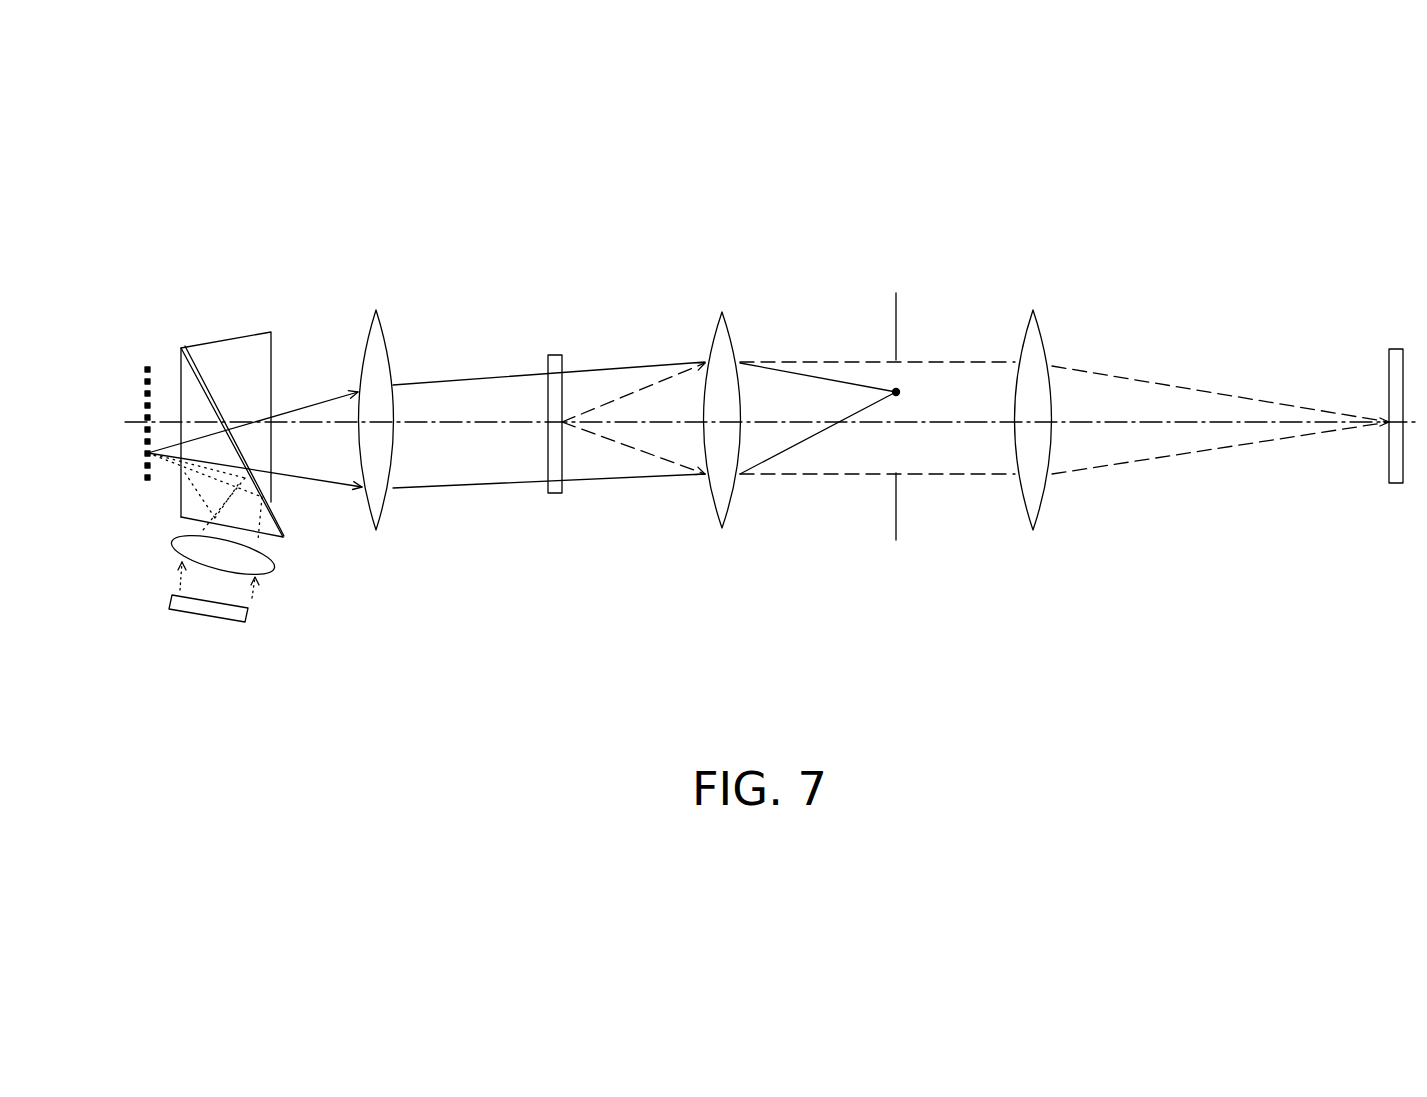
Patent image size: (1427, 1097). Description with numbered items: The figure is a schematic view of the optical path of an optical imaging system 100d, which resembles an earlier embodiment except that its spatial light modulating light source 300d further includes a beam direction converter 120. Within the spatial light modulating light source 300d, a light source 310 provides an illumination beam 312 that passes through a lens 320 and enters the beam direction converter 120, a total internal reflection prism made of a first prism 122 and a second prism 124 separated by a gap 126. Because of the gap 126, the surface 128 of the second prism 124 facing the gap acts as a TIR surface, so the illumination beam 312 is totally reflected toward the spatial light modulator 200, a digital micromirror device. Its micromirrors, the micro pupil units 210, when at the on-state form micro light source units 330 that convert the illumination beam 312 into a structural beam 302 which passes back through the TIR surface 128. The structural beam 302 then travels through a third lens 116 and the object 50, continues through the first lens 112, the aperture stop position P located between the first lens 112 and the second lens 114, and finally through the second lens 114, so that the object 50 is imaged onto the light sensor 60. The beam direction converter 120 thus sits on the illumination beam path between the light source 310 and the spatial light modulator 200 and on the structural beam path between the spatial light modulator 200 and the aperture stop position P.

The optical imaging system 100d is at (1395, 693).
The spatial light modulating light source 300d is at (233, 514).
The structural beam 302 is at (317, 400).
The third lens 116 is at (377, 333).
The first lens 112 is at (722, 335).
The second lens 114 is at (1032, 338).
The object 50 is at (553, 493).
The light sensor 60 is at (1395, 483).
The aperture stop position P is at (896, 558).
The spatial light modulator 200 is at (131, 508).
The micro pupil units 210 is at (142, 383).
The micro light source units 330 is at (117, 398).
The illumination beam 312 is at (146, 454).
The beam direction converter 120 is at (270, 485).
The first prism 122 is at (226, 424).
The second prism 124 is at (232, 527).
The gap 126 is at (182, 349).
The TIR surface 128 is at (207, 393).
The light source 310 is at (214, 631).
The lens 320 is at (263, 568).